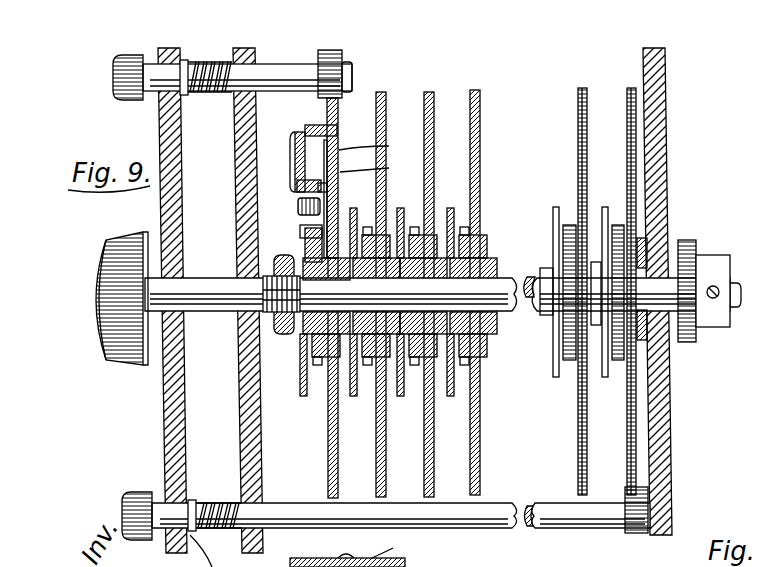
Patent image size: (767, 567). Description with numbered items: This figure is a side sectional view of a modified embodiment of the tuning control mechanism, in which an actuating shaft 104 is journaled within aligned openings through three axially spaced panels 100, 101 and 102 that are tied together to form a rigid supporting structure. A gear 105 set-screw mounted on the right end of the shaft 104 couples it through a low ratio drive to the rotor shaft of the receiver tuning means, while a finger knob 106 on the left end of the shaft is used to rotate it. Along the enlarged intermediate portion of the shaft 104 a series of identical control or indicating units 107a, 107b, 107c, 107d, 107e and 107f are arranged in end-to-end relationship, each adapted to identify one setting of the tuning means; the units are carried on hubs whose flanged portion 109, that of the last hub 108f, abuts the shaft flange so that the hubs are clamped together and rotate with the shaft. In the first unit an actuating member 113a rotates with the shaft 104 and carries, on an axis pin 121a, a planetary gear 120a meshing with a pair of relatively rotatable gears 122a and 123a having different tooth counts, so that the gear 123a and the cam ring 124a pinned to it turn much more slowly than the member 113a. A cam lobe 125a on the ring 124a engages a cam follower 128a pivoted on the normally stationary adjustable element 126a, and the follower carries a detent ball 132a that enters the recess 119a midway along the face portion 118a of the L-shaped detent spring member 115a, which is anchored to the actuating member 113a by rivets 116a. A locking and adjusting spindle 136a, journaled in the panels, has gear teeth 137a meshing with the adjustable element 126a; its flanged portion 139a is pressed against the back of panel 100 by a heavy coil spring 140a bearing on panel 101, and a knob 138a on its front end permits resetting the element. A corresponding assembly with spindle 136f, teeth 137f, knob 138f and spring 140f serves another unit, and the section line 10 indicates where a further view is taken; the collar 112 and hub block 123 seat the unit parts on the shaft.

The section line 10 is at (290, 61).
The panel 100 is at (162, 402).
The panel 101 is at (246, 402).
The panel 102 is at (666, 60).
The actuating shaft 104 is at (199, 285).
The gear 105 is at (690, 240).
The finger knob 106 is at (120, 363).
The control or indicating unit 107a is at (311, 408).
The control or indicating unit 107b is at (358, 410).
The control or indicating unit 107c is at (413, 402).
The control or indicating unit 107d is at (462, 402).
The control or indicating unit 107e is at (561, 400).
The control or indicating unit 107f is at (615, 400).
The hub 108f is at (642, 240).
The flanged portion 109 is at (265, 333).
The collar 112 is at (262, 343).
The actuating member 113a is at (322, 395).
The detent spring member 115a is at (298, 186).
The rivets 116a is at (296, 160).
The face portion 118a is at (330, 560).
The depression or recess 119a is at (336, 112).
The orbital or planetary gear 120a is at (337, 160).
The axis pin 121a is at (330, 190).
The gear 122a is at (301, 231).
The hub block 123 is at (290, 246).
The gear 123a is at (299, 208).
The cam ring 124a is at (332, 393).
The cam lobe 125a is at (384, 167).
The adjustable element or gear 126a is at (332, 463).
The cam follower 128a is at (383, 145).
The detent ball 132a is at (337, 130).
The locking and adjusting spindle 136a is at (292, 93).
The spindle 136f is at (548, 530).
The gear teeth 137a is at (343, 54).
The gear f 137f is at (633, 534).
The knob 138a is at (112, 90).
The bolt head f 138f is at (137, 492).
The flanged portion 139a is at (186, 98).
The coil spring 140a is at (205, 96).
The spring f 140f is at (212, 501).